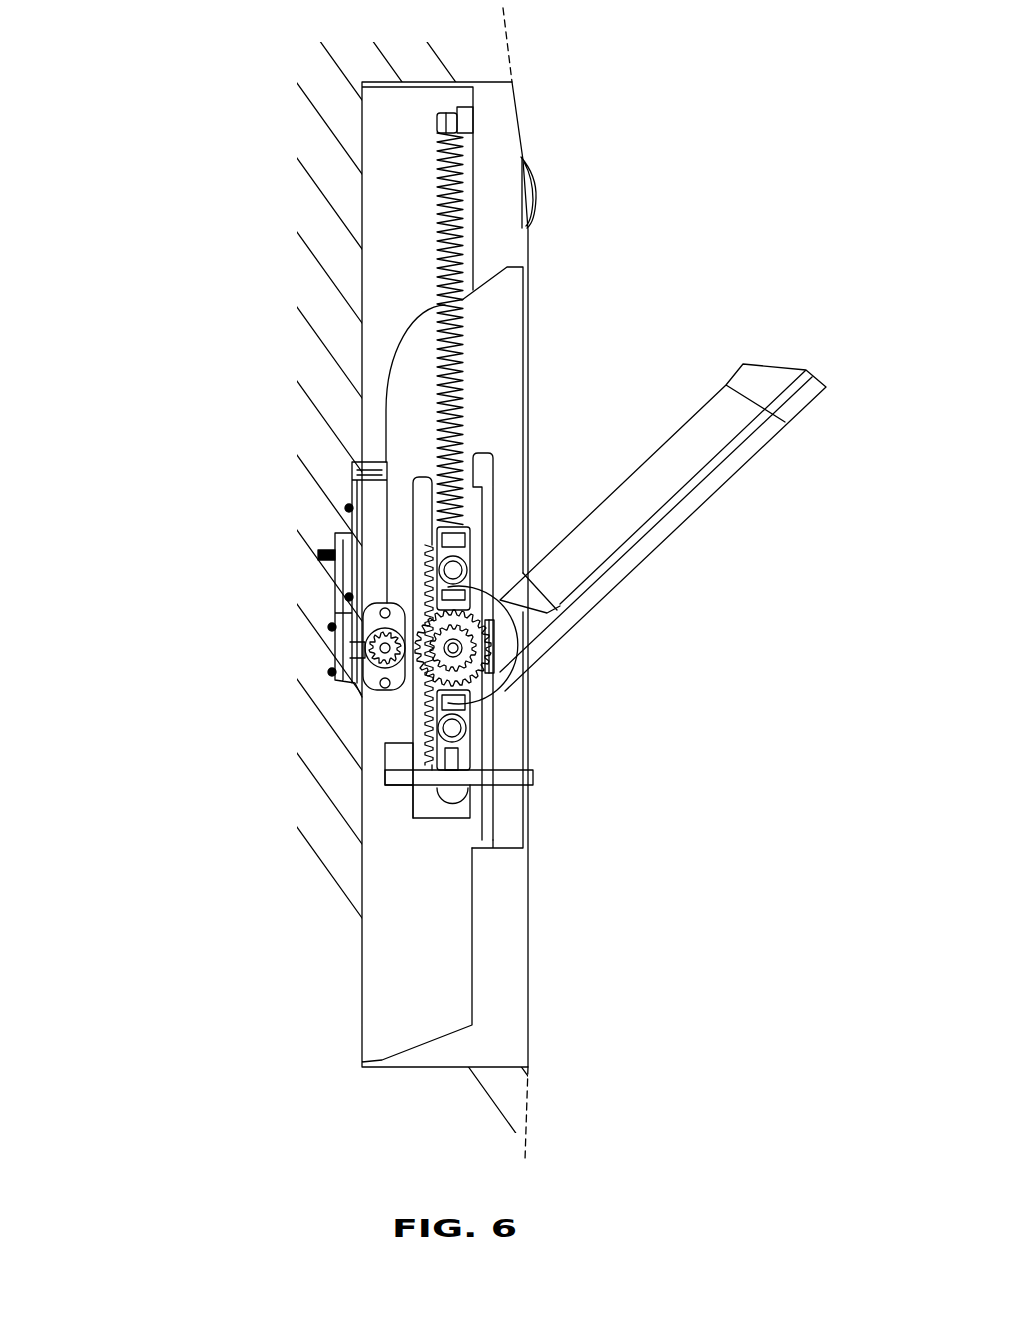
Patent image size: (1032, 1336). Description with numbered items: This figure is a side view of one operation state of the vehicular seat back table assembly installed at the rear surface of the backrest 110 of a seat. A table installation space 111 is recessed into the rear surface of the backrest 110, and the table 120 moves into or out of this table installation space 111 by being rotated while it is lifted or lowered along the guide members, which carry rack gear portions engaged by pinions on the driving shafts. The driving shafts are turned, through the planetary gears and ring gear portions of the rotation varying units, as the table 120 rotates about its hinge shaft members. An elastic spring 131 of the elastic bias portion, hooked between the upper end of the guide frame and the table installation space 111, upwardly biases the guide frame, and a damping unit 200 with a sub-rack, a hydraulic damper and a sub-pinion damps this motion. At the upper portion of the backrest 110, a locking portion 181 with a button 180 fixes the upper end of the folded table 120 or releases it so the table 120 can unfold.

The backrest 110 is at (325, 247).
The table installation space 111 is at (500, 332).
The elastic spring 131 is at (462, 400).
The button 180 is at (557, 157).
The locking portion 181 is at (536, 197).
The table 120 is at (703, 490).
The damping unit 200 is at (358, 695).